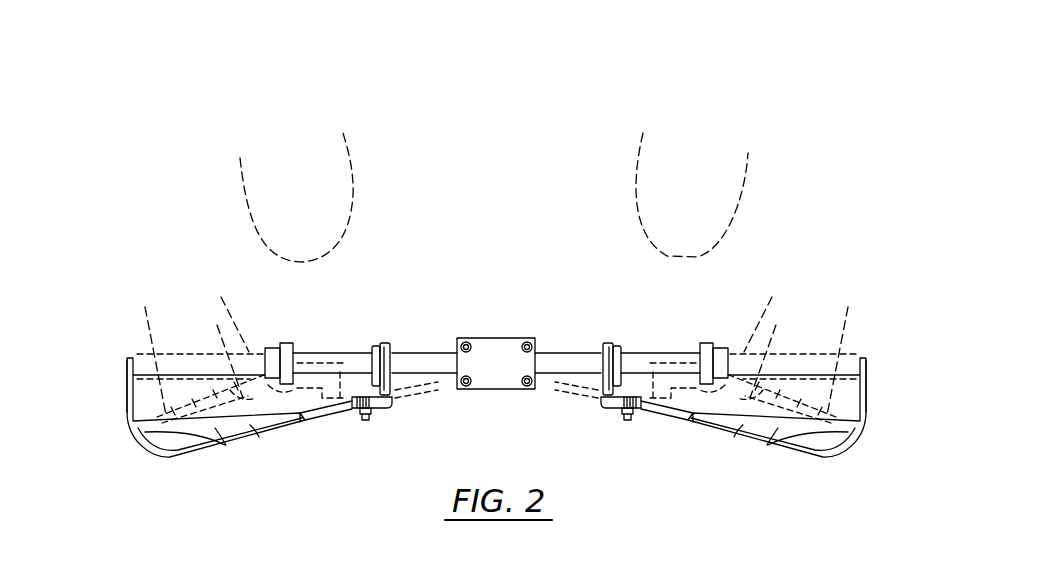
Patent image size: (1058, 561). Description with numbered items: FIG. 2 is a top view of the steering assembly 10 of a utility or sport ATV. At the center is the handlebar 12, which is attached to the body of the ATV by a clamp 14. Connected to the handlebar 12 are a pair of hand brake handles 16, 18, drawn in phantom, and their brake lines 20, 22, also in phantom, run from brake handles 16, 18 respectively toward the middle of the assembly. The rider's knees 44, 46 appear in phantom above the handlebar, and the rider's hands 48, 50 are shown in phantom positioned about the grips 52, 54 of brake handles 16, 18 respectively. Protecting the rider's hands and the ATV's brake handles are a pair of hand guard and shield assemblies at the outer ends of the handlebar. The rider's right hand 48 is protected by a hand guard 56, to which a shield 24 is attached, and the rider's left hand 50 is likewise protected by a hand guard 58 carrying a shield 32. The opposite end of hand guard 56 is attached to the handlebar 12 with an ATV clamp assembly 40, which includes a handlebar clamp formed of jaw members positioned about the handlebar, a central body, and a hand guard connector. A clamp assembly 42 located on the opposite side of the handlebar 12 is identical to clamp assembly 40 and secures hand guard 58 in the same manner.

The steering assembly 10 is at (350, 490).
The handlebar 12 is at (570, 353).
The clamp 14 is at (492, 338).
The hand brake handle 16 is at (317, 360).
The hand brake handle 18 is at (688, 360).
The brake line 20 is at (410, 395).
The brake line 22 is at (585, 398).
The shield 24 is at (207, 458).
The shield 32 is at (783, 458).
The ATV clamp assembly 40 is at (386, 426).
The clamp assembly 42 is at (607, 426).
The knee of rider 44 is at (328, 255).
The knee of rider 46 is at (680, 258).
The rider's right hand 48 is at (225, 303).
The rider's left hand 50 is at (768, 302).
The grip 52 is at (233, 403).
The grip 54 is at (755, 403).
The hand guard 56 is at (127, 408).
The hand guard 58 is at (865, 393).